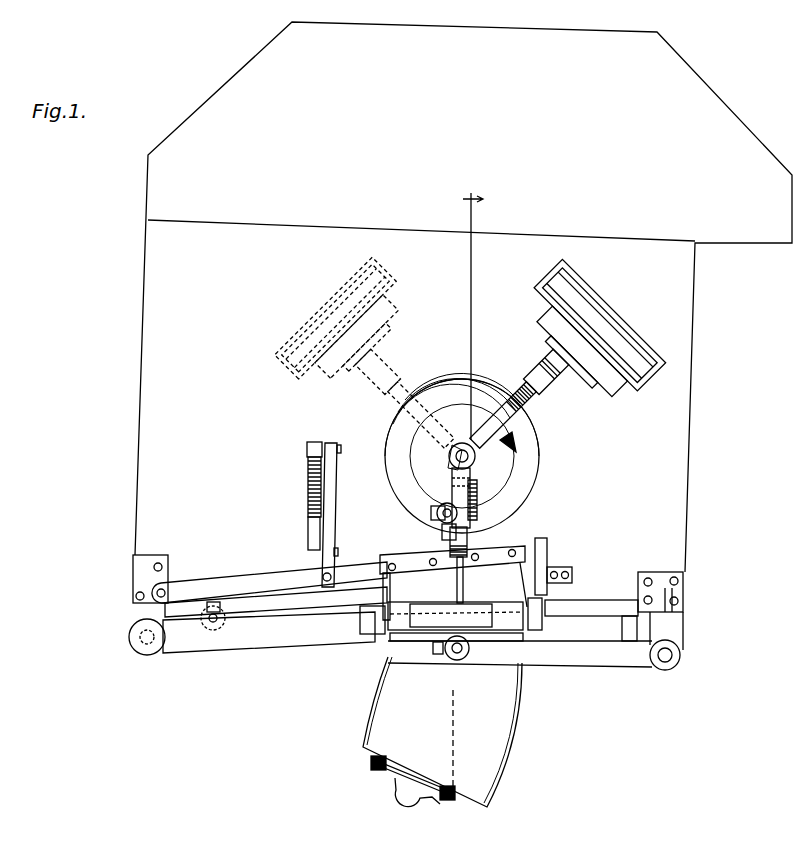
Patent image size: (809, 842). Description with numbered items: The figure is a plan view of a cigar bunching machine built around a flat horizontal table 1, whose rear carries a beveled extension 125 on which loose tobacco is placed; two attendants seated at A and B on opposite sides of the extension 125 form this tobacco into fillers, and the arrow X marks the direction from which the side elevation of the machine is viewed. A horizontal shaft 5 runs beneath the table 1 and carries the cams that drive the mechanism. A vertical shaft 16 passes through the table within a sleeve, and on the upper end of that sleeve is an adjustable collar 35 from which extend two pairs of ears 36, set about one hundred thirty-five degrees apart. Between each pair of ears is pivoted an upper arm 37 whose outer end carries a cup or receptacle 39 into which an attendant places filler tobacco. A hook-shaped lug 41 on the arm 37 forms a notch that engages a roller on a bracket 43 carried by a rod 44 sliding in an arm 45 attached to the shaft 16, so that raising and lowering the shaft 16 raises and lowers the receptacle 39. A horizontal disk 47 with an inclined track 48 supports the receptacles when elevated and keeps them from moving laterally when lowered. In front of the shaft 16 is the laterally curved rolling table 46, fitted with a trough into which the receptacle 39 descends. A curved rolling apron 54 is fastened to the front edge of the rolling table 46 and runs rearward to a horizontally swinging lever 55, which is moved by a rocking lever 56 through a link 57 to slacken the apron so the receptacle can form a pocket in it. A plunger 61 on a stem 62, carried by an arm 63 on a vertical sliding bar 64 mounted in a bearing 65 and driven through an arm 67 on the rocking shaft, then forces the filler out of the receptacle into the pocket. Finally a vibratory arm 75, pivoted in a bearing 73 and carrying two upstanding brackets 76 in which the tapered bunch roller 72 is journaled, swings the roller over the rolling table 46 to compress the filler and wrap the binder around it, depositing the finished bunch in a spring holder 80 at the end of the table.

The table 1 is at (226, 397).
The horizontal shaft 5 is at (453, 816).
The vertical shaft 16 is at (464, 456).
The collar 35 is at (450, 460).
The ears 36 is at (503, 415).
The upper arm 37 is at (546, 371).
The cup or receptacle 39 is at (589, 335).
The hook-shaped lug 41 is at (452, 405).
The bracket 43 is at (443, 534).
The rod 44 is at (432, 517).
The arm 45 is at (450, 492).
The rolling table 46 is at (381, 700).
The horizontal disk 47 is at (508, 445).
The inclined track 48 is at (397, 421).
The rolling apron 54 is at (532, 725).
The horizontally swinging lever 55 is at (286, 580).
The rocking lever 56 is at (307, 468).
The link 57 is at (343, 515).
The plunger 61 is at (413, 647).
The stem 62 is at (458, 650).
The arm 63 is at (569, 650).
The vertical sliding bar 64 is at (665, 658).
The bearing 65 is at (672, 628).
The arm 67 is at (628, 628).
The bunch roller 72 is at (527, 607).
The bearing 73 is at (137, 631).
The vibratory arm 75 is at (269, 632).
The upstanding brackets 76 is at (560, 605).
The spring holder 80 is at (411, 781).
The extension 125 is at (477, 104).
The attendant position A is at (751, 84).
The attendant position B is at (200, 67).
The viewing direction arrow X is at (760, 467).